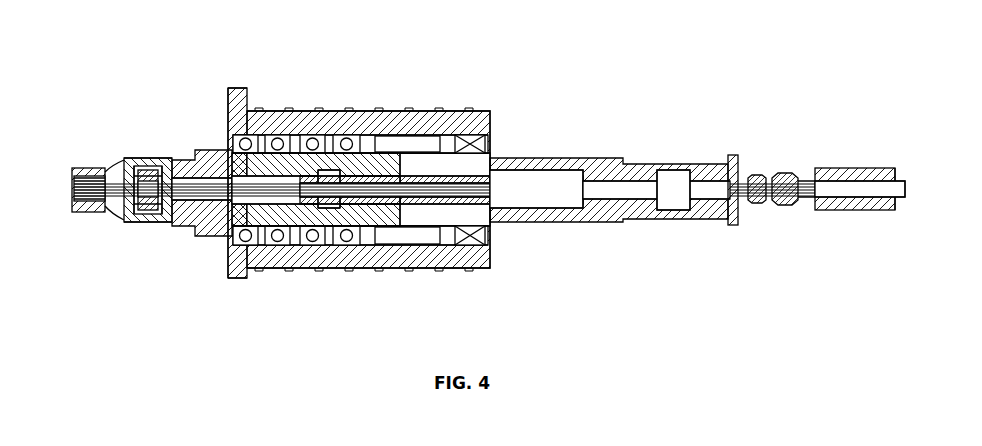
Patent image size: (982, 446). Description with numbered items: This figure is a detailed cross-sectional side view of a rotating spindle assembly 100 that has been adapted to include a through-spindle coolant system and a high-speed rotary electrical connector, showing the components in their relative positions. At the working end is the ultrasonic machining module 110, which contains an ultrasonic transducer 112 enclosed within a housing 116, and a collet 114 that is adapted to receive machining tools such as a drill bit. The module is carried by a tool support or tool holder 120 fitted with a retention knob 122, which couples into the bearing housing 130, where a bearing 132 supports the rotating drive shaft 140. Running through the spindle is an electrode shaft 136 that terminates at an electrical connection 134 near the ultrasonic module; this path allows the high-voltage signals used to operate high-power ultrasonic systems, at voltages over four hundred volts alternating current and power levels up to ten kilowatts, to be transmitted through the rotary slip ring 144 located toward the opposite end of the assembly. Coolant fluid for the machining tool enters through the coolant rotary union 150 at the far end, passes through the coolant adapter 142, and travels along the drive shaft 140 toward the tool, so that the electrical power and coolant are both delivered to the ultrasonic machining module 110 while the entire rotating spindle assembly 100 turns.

The rotating spindle assembly 100 is at (610, 125).
The ultrasonic machining module 110 is at (157, 157).
The ultrasonic transducer 112 is at (148, 214).
The collet 114 is at (84, 208).
The housing 116 is at (140, 158).
The tool support or tool holder 120 is at (190, 230).
The retention knob 122 is at (284, 206).
The bearing housing 130 is at (400, 110).
The bearing 132 is at (306, 138).
The electrical connection 134 is at (326, 210).
The electrode shaft 136 is at (521, 186).
The drive shaft 140 is at (613, 220).
The coolant adapter 142 is at (764, 203).
The rotary slip ring 144 is at (780, 176).
The coolant rotary union 150 is at (856, 211).